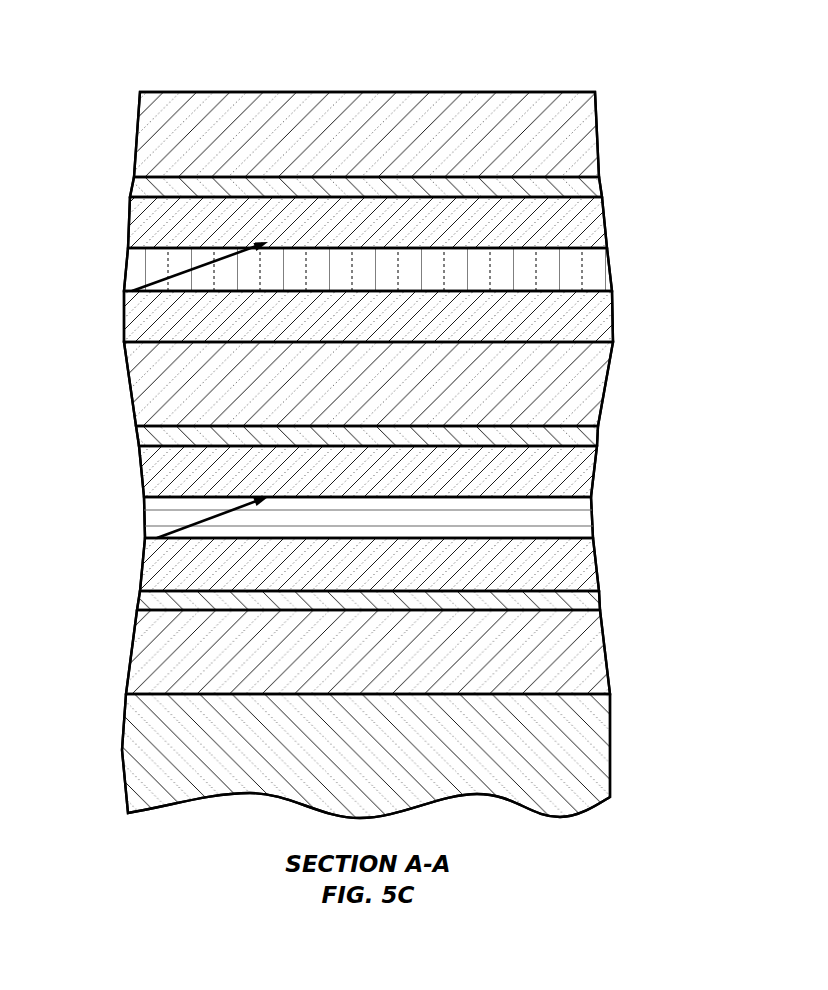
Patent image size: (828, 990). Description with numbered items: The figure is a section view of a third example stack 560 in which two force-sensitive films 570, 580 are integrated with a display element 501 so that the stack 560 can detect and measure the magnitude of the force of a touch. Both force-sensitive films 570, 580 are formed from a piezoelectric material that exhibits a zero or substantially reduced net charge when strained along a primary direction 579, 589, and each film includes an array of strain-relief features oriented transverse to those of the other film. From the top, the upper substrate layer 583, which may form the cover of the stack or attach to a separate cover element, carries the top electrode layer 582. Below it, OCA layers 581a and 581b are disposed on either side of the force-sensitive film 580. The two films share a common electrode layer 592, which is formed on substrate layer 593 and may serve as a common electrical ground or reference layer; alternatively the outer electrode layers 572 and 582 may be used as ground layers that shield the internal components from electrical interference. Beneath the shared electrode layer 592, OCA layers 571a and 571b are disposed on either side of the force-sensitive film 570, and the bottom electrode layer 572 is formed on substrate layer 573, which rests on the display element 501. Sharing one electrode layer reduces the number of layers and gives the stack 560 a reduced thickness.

The stack 560 is at (118, 40).
The substrate layer 583 is at (599, 135).
The electrode layer 582 is at (603, 190).
The OCA layer 581a is at (606, 225).
The force-sensitive film 580 is at (610, 272).
The primary direction 589 is at (200, 268).
The OCA layer 581b is at (612, 318).
The substrate layer 593 is at (606, 387).
The common electrode layer 592 is at (598, 438).
The OCA layer 571a is at (594, 474).
The force-sensitive film 570 is at (592, 521).
The primary direction 579 is at (200, 521).
The OCA layer 571b is at (596, 568).
The electrode layer 572 is at (600, 604).
The substrate layer 573 is at (605, 656).
The display element 501 is at (610, 742).